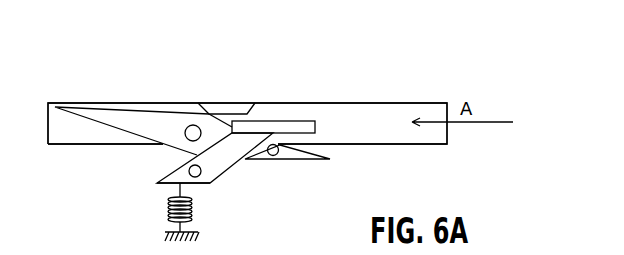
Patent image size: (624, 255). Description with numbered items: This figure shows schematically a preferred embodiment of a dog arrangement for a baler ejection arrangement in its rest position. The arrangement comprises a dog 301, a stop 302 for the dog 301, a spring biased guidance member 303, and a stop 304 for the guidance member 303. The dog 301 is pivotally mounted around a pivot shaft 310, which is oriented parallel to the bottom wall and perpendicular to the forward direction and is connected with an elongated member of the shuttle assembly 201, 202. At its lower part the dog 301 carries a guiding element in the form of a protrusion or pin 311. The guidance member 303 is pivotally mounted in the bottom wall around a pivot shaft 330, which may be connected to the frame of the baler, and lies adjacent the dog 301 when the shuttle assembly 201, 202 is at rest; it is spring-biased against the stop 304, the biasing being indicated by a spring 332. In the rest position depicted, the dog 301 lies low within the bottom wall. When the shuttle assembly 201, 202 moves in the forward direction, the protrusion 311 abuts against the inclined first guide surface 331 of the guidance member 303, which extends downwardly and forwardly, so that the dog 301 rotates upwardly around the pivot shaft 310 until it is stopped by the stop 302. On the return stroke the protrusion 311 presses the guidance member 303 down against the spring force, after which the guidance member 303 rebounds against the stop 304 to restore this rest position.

The shuttle assembly 201 is at (382, 120).
The shuttle assembly 202 is at (382, 120).
The dog 301 is at (142, 124).
The stop for the dog 302 is at (232, 111).
The spring biased guidance member 303 is at (246, 161).
The stop for the guidance member 304 is at (301, 121).
The pivot shaft 310 is at (191, 125).
The protrusion 311 is at (297, 163).
The pivot shaft 330 is at (190, 168).
The first guide surface 331 is at (223, 172).
The spring 332 is at (168, 212).